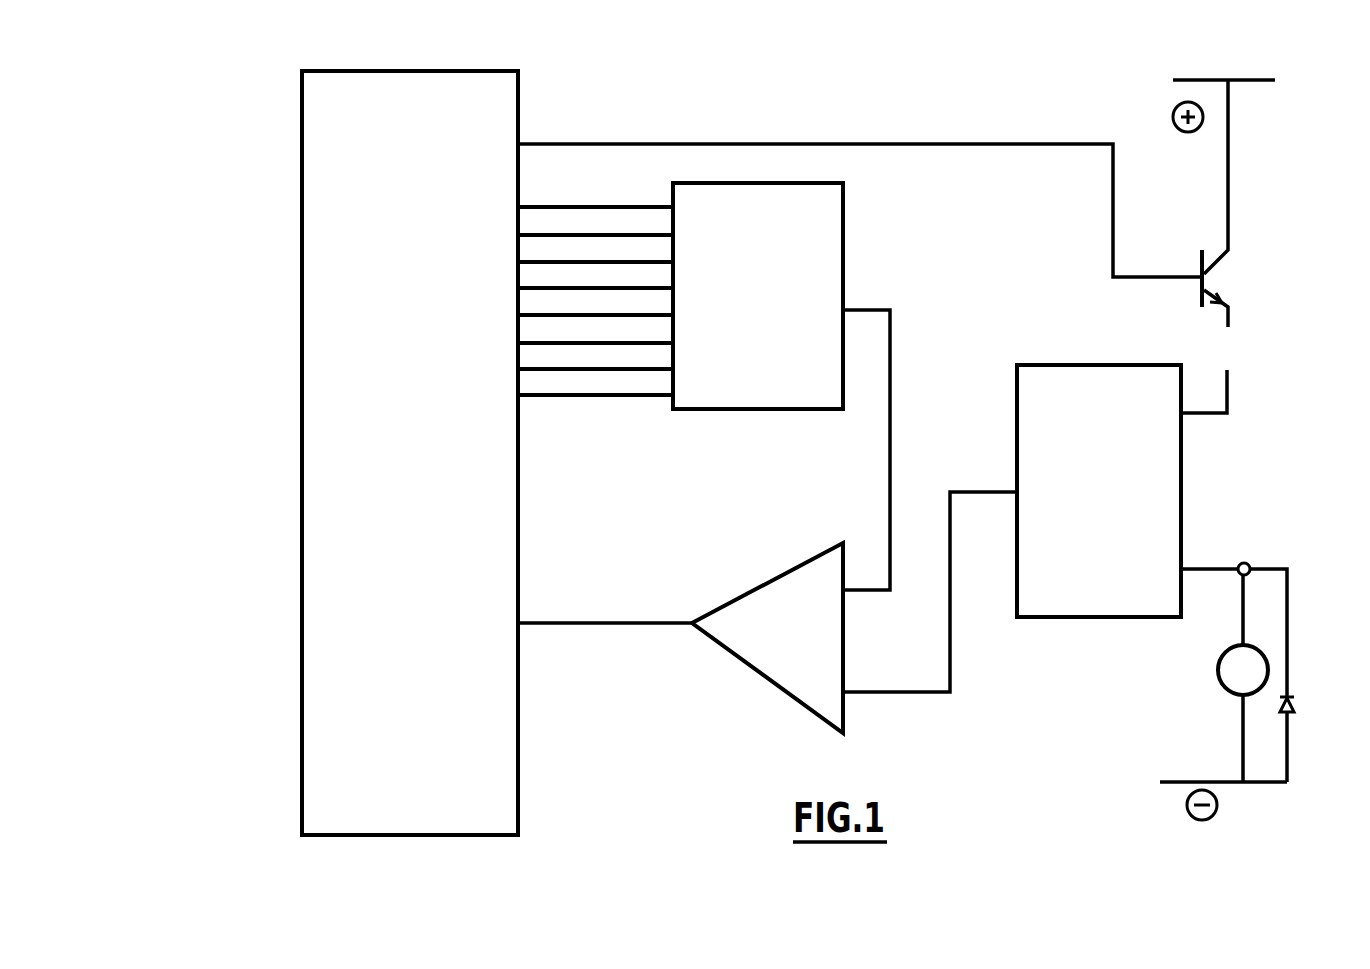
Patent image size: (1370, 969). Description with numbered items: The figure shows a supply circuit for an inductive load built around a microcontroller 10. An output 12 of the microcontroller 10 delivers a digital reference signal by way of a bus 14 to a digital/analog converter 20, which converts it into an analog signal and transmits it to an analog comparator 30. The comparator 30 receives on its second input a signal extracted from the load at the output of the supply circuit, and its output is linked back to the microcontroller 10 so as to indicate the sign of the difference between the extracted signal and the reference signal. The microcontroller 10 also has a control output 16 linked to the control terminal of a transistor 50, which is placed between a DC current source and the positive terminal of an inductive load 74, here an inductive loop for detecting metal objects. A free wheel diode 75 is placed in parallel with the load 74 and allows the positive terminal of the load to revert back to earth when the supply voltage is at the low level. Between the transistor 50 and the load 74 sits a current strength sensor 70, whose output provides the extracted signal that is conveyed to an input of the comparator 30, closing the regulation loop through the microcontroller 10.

The microcontroller 10 is at (333, 454).
The output 12 is at (520, 205).
The bus 14 is at (614, 402).
The control output 16 is at (522, 143).
The digital/analog converter 20 is at (818, 254).
The analog comparator 30 is at (793, 668).
The transistor 50 is at (1190, 78).
The current strength sensor 70 is at (1094, 578).
The inductive load 74 is at (1230, 670).
The free wheel diode 75 is at (1294, 694).